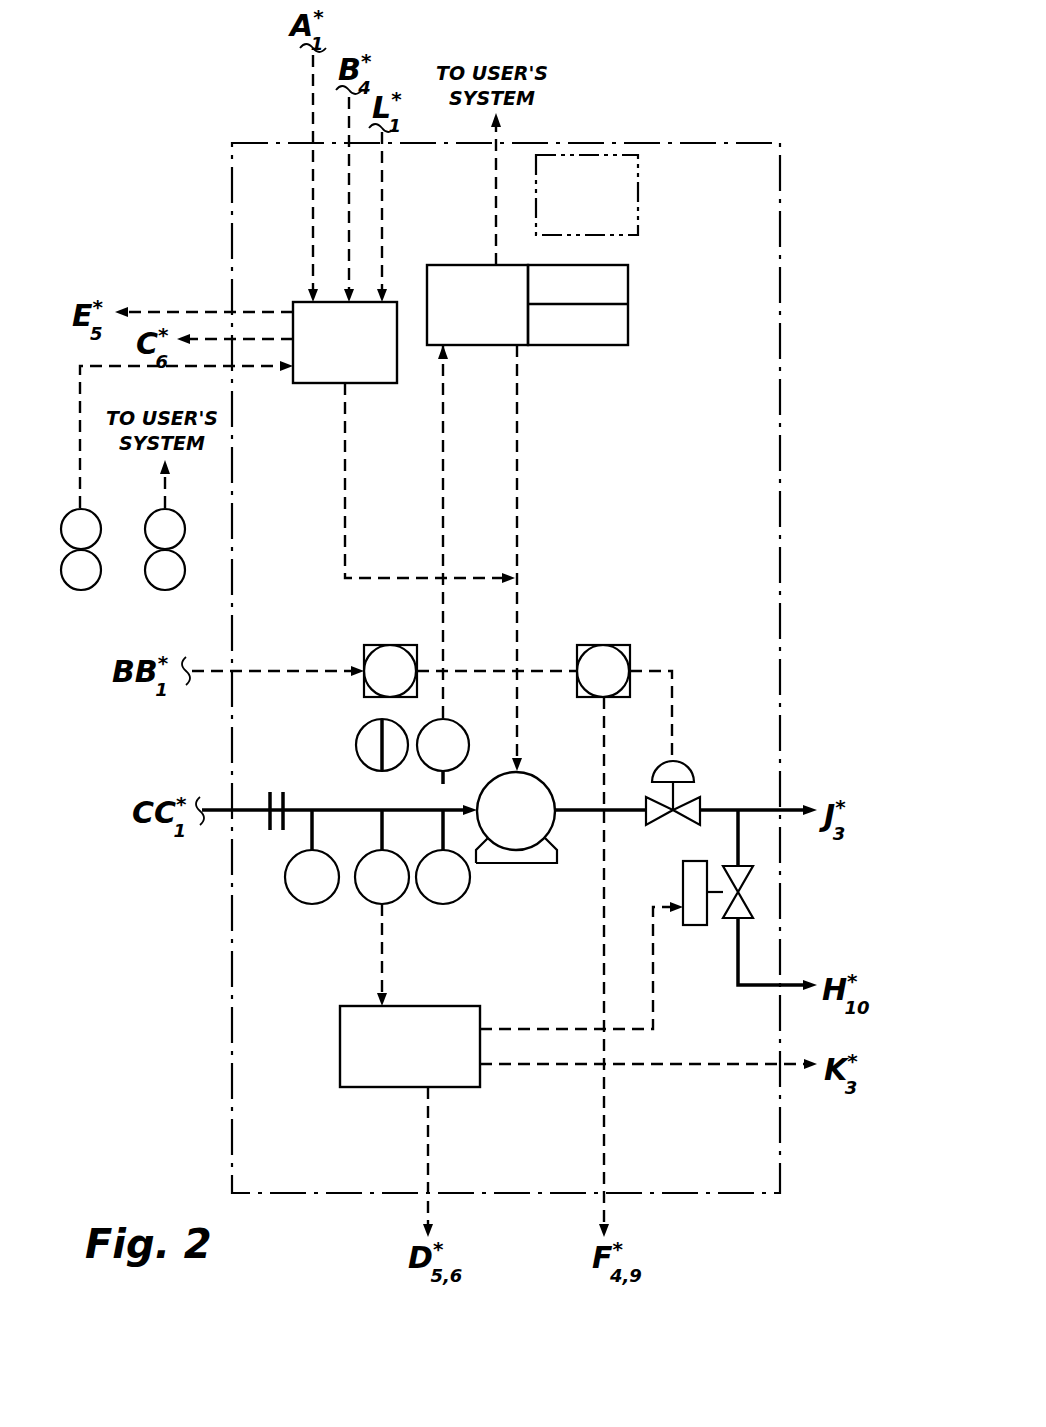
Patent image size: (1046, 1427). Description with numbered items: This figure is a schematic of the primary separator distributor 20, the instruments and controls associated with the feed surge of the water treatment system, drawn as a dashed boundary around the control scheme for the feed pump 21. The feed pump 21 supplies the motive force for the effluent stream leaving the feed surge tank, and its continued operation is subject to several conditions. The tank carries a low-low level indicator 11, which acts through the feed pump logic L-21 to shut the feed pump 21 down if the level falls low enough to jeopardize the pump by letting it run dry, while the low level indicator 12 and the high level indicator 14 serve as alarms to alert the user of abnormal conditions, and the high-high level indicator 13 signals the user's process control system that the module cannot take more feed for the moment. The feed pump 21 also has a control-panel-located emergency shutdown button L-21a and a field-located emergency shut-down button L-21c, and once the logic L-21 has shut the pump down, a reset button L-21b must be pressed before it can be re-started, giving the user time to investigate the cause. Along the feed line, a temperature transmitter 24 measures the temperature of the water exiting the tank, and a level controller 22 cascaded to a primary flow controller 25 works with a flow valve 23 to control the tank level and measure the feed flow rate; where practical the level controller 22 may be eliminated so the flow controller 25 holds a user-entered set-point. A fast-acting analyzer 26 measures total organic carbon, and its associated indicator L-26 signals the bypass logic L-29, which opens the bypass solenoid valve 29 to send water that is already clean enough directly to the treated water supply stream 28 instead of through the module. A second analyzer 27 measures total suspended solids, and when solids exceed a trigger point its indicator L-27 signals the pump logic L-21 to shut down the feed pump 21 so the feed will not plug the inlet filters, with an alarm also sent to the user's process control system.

The primary separator distributor 20 is at (763, 141).
The feed pump logic L-21 is at (297, 300).
The control-panel-located emergency shutdown button L-21a is at (460, 263).
The reset button L-21b is at (628, 345).
The field-located emergency shut-down button L-21c is at (640, 175).
The low-low level indicator 11 is at (68, 515).
The low level indicator 12 is at (68, 586).
The high-high level indicator 13 is at (150, 515).
The high level indicator 14 is at (152, 586).
The level controller 22 is at (370, 645).
The primary flow controller 25 is at (617, 645).
The fast-acting analyzer 26 is at (356, 740).
The indicator L-27 is at (460, 728).
The feed pump 21 is at (543, 778).
The flow valve 23 is at (690, 768).
The temperature transmitter 24 is at (295, 897).
The indicator L-26 is at (368, 900).
The analyzer 27 is at (432, 903).
The bypass solenoid valve 29 is at (683, 870).
The treated water supply stream 28 is at (738, 990).
The bypass logic L-29 is at (345, 1088).